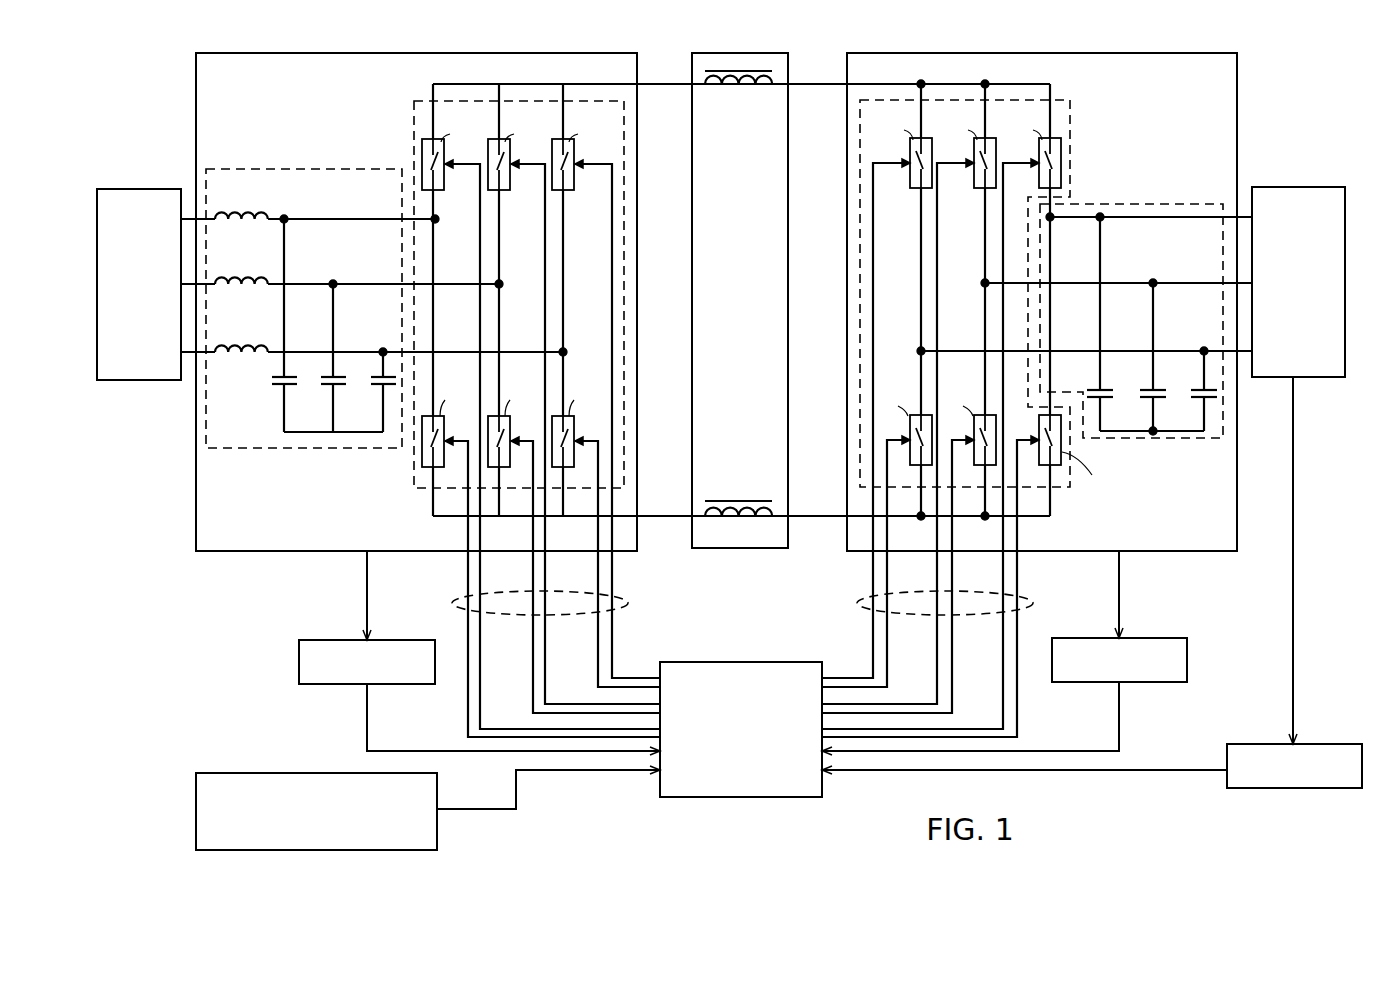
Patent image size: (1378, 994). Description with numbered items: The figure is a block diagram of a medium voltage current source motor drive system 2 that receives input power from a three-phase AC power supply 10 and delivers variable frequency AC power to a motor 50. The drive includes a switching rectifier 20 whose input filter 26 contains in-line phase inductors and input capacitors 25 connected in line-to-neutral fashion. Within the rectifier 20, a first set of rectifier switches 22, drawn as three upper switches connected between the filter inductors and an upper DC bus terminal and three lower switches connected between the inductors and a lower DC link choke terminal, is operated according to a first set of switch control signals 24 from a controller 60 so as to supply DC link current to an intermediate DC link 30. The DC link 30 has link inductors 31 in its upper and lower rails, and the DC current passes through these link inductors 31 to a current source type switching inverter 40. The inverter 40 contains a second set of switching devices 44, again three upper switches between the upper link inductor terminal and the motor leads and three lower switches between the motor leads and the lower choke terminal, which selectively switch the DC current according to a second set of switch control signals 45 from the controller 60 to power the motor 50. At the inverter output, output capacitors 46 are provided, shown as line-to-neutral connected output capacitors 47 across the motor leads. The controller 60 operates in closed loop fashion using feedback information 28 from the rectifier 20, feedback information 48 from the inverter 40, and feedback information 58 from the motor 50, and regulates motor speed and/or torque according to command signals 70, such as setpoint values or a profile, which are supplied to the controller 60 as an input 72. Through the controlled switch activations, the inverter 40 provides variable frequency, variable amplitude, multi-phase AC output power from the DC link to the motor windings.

The medium voltage current source motor drive system 2 is at (172, 76).
The AC power supply 10 is at (128, 343).
The switching rectifier 20 is at (196, 132).
The rectifier switches 22 is at (414, 118).
The first set of switch control signals 24 is at (456, 598).
The input capacitors 25 is at (272, 442).
The input filter 26 is at (304, 337).
The feedback information 28 is at (299, 662).
The intermediate DC link 30 is at (728, 341).
The link inductors 31 is at (740, 88).
The switching inverter 40 is at (1237, 88).
The inverter switching devices 44 is at (860, 138).
The second set of switch control signals 45 is at (860, 598).
The output capacitors 46 is at (1131, 350).
The line-to-neutral connected output capacitors 47 is at (1178, 348).
The feedback information 48 is at (1187, 660).
The motor 50 is at (1286, 327).
The feedback information 58 is at (1240, 744).
The controller 60 is at (729, 763).
The command signals 70 is at (196, 813).
The input 72 is at (518, 798).